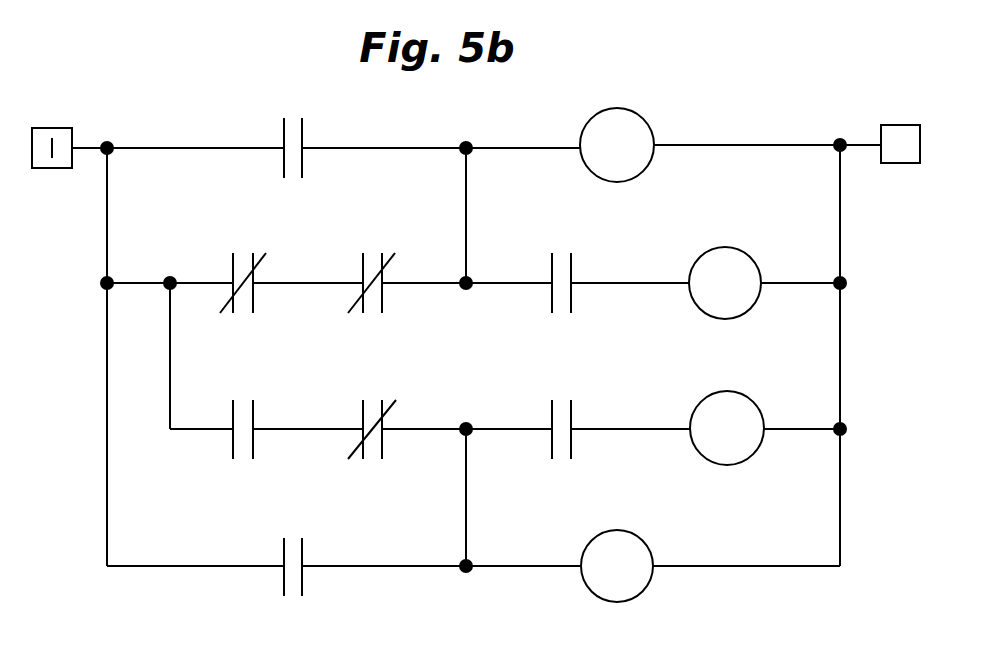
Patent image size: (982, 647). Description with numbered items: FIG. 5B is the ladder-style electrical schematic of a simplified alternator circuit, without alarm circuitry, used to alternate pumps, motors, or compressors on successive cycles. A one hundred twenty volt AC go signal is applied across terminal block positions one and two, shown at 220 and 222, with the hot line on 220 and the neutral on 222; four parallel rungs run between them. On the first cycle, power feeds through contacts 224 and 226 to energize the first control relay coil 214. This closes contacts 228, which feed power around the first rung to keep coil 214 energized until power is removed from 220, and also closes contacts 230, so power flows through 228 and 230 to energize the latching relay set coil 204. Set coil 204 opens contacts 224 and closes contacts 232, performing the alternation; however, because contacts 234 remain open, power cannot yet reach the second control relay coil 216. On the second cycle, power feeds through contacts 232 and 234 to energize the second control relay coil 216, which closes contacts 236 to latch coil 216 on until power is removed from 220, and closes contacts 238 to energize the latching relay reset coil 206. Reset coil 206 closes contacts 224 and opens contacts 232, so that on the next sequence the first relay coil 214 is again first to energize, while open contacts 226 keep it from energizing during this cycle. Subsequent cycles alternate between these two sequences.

The terminal block position 1 220 is at (60, 128).
The terminal block position 2 222 is at (895, 124).
The contacts 228 is at (306, 146).
The CR1A coil 214 is at (650, 128).
The contacts 224 is at (256, 282).
The contacts 226 is at (385, 282).
The contacts 230 is at (574, 282).
The LR-S coil 204 is at (722, 247).
The contacts 232 is at (256, 428).
The contacts 234 is at (385, 428).
The contacts 238 is at (574, 428).
The LR-R coil 206 is at (750, 400).
The contacts 236 is at (305, 564).
The CR2A coil 216 is at (626, 530).